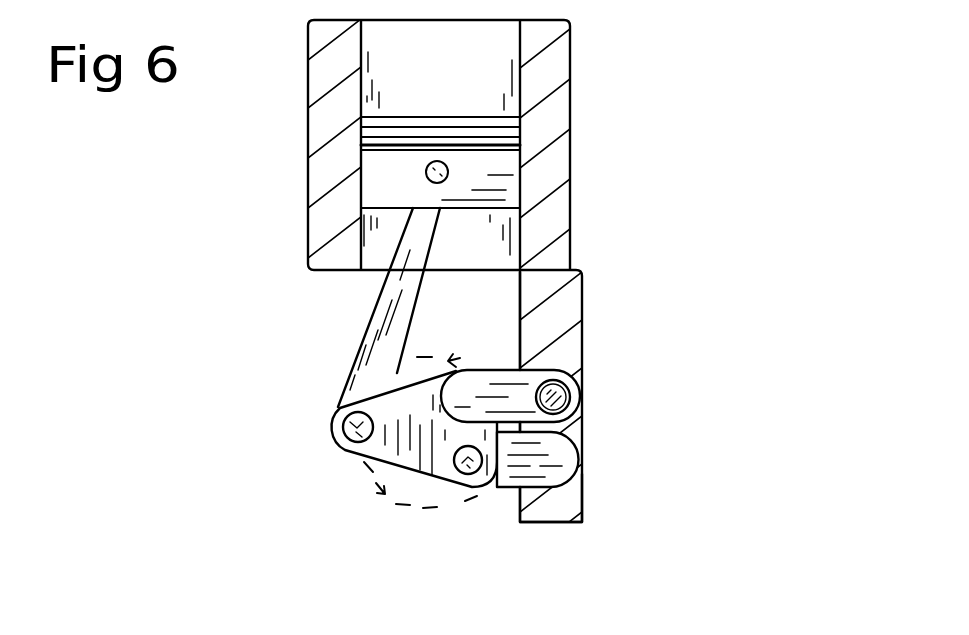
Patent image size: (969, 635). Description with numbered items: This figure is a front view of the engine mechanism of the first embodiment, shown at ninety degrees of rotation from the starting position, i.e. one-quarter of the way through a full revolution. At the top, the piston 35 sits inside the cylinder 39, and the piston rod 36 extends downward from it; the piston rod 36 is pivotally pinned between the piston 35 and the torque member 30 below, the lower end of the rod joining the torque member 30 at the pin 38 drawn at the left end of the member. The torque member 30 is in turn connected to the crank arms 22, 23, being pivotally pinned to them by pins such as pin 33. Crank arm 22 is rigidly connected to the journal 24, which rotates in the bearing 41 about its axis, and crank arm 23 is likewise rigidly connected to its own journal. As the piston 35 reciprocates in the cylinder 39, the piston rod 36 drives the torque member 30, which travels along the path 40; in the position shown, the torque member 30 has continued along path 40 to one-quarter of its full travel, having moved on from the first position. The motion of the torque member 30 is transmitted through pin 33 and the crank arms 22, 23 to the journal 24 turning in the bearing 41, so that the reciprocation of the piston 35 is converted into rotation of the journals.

The cylinder 39 is at (500, 43).
The piston 35 is at (495, 163).
The piston rod 36 is at (410, 233).
The torque member 30 is at (403, 447).
The crank arm 22 is at (508, 388).
The journal 24 is at (562, 386).
The crank arm 23 is at (545, 460).
The crank pin 38 is at (341, 409).
The pin 33 is at (465, 476).
The path 40 is at (398, 503).
The bearing 41 is at (545, 503).